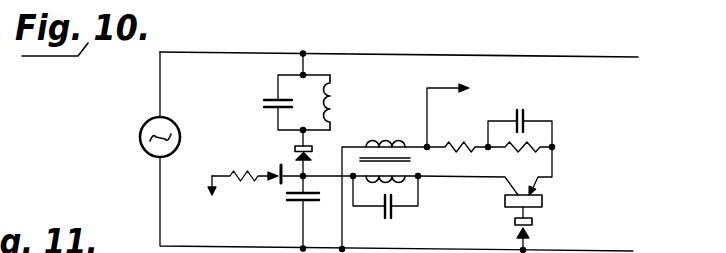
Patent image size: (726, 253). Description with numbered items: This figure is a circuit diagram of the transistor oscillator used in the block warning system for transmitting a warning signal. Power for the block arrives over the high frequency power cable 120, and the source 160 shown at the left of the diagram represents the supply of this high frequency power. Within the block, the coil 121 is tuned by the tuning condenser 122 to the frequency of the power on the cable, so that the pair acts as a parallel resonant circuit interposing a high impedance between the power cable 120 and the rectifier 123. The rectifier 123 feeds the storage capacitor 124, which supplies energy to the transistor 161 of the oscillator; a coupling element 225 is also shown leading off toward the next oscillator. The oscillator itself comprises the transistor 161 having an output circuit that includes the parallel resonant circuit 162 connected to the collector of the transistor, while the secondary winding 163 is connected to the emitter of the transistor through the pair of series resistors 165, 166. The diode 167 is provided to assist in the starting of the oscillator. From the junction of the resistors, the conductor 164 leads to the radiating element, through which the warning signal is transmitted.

The high frequency power cable 120 is at (220, 52).
The AC power source 160 is at (149, 127).
The tuning condenser 122 is at (262, 100).
The coil 121 is at (335, 94).
The rectifier 123 is at (314, 146).
The coupling network to next oscillator 225 is at (278, 163).
The storage capacitor 124 is at (296, 203).
The secondary winding 163 is at (391, 141).
The conductor 164 is at (427, 98).
The series resistor 165 is at (458, 145).
The series resistor 166 is at (531, 141).
The transistor 161 is at (542, 203).
The diode 167 is at (533, 226).
The parallel resonant circuit 162 is at (404, 213).